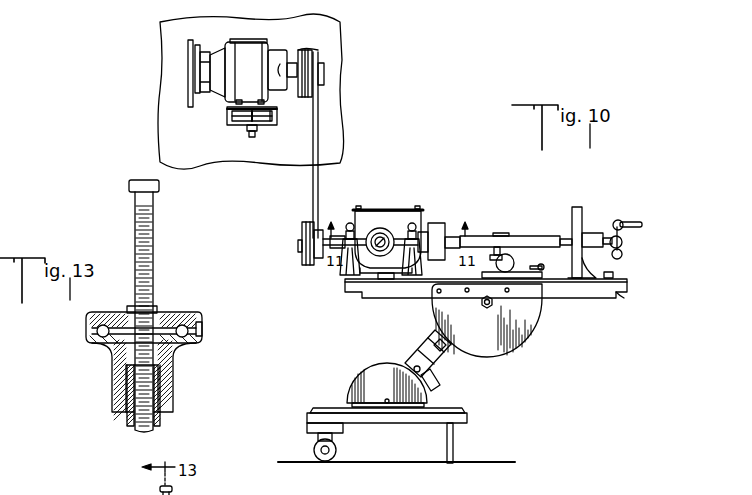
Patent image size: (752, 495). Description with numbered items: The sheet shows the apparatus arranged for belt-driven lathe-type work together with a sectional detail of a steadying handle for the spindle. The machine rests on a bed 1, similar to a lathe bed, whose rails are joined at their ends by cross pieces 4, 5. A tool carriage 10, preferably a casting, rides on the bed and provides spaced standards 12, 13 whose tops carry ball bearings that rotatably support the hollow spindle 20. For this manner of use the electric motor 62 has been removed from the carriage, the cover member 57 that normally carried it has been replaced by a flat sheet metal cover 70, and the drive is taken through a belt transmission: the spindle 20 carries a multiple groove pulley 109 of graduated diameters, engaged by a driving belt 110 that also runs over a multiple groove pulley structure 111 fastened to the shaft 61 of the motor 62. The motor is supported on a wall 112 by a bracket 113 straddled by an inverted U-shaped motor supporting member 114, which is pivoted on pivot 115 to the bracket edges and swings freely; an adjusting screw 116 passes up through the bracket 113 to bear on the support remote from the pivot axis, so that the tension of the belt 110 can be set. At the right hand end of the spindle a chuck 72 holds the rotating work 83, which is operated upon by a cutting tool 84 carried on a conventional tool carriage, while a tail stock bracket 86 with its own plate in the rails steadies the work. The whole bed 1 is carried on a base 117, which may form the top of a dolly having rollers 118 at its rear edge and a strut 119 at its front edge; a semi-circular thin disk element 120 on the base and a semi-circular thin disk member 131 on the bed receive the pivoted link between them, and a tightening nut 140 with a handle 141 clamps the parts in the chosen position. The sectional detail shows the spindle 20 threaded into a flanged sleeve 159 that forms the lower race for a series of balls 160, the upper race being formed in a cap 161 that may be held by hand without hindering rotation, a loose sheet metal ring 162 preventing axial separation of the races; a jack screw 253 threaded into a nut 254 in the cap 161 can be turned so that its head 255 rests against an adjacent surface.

In FIG. 10, the bed 1 is at (574, 292).
In FIG. 10, the cross piece 4 is at (620, 297).
In FIG. 10, the cross piece 5 is at (350, 296).
In FIG. 10, the tool carriage 10 is at (363, 222).
In FIG. 10, the standard 12 is at (352, 270).
In FIG. 10, the standard 13 is at (412, 262).
In FIG. 10, the spindle 20 is at (338, 238).
In FIG. 13, the spindle 20 is at (126, 423).
In FIG. 10, the cover member 57 is at (188, 62).
In FIG. 10, the motor shaft 61 is at (296, 50).
In FIG. 10, the electric motor 62 is at (247, 58).
In FIG. 10, the sheet metal cover 70 is at (400, 208).
In FIG. 10, the chuck 72 is at (437, 225).
In FIG. 10, the work 83 is at (524, 236).
In FIG. 10, the cutting tool 84 is at (480, 235).
In FIG. 10, the tail stock bracket 86 is at (580, 212).
In FIG. 10, the multiple groove pulley 109 is at (304, 258).
In FIG. 10, the driving belt 110 is at (313, 142).
In FIG. 10, the multiple groove pulley structure 111 is at (318, 47).
In FIG. 10, the wall 112 is at (166, 103).
In FIG. 10, the bracket 113 is at (245, 126).
In FIG. 10, the motor supporting member 114 is at (230, 116).
In FIG. 10, the pivot 115 is at (270, 118).
In FIG. 10, the adjusting screw 116 is at (253, 138).
In FIG. 10, the base 117 is at (463, 410).
In FIG. 10, the rollers 118 is at (327, 456).
In FIG. 10, the strut 119 is at (454, 446).
In FIG. 10, the semi-circular thin disk element 120 is at (362, 386).
In FIG. 10, the semi-circular thin disk member 131 is at (518, 343).
In FIG. 10, the tightening nut 140 is at (418, 356).
In FIG. 10, the handle 141 is at (434, 382).
In FIG. 13, the flanged sleeve 159 is at (172, 362).
In FIG. 13, the balls 160 is at (182, 312).
In FIG. 13, the cap 161 is at (120, 312).
In FIG. 13, the sheet metal ring 162 is at (202, 328).
In FIG. 13, the jack screw 253 is at (135, 247).
In FIG. 13, the nut 254 is at (158, 292).
In FIG. 13, the head 255 is at (135, 181).